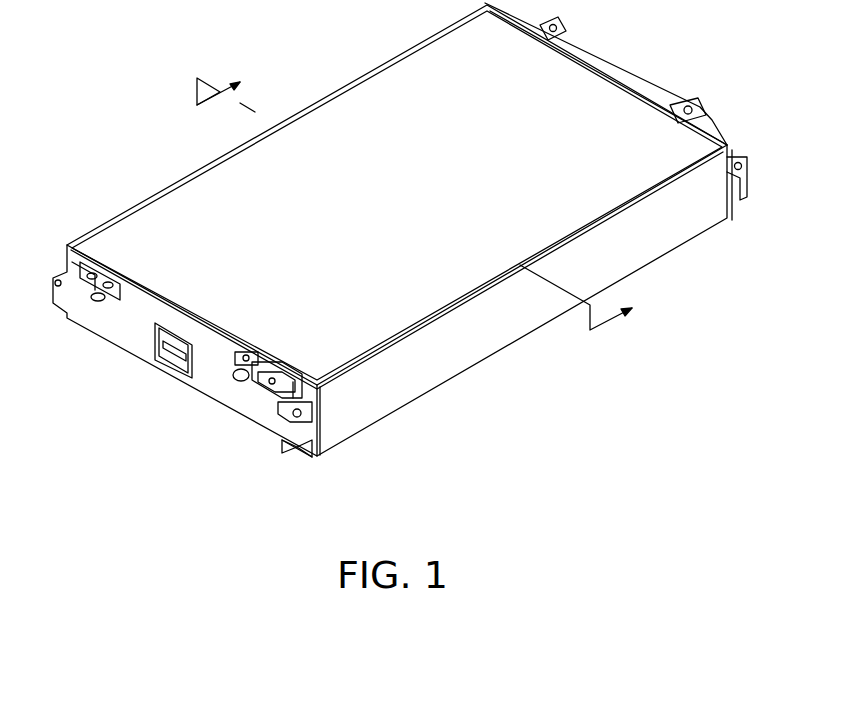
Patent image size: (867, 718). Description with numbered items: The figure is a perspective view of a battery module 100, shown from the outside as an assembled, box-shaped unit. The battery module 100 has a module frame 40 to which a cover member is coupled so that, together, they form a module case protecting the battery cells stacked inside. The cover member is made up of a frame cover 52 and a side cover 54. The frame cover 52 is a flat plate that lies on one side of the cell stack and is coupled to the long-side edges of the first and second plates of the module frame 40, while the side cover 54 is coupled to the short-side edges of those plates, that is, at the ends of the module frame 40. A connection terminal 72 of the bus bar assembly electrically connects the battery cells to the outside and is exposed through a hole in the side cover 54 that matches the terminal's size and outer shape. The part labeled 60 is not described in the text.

The battery module 100 is at (82, 72).
The module frame 40 is at (398, 282).
The frame cover 52 is at (678, 210).
The side cover 54 is at (258, 423).
The mounting bracket 60 is at (738, 180).
The connection terminal 72 is at (253, 387).